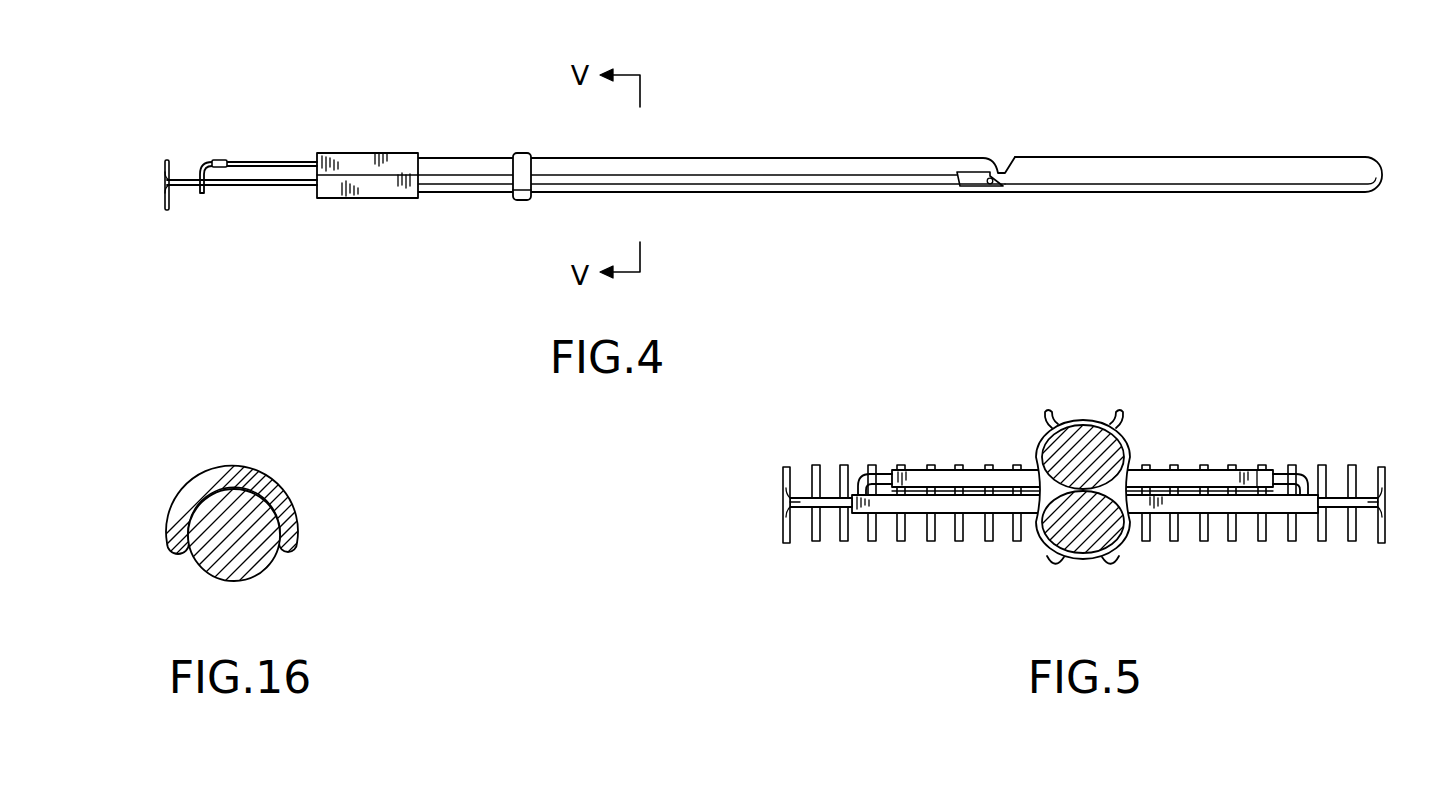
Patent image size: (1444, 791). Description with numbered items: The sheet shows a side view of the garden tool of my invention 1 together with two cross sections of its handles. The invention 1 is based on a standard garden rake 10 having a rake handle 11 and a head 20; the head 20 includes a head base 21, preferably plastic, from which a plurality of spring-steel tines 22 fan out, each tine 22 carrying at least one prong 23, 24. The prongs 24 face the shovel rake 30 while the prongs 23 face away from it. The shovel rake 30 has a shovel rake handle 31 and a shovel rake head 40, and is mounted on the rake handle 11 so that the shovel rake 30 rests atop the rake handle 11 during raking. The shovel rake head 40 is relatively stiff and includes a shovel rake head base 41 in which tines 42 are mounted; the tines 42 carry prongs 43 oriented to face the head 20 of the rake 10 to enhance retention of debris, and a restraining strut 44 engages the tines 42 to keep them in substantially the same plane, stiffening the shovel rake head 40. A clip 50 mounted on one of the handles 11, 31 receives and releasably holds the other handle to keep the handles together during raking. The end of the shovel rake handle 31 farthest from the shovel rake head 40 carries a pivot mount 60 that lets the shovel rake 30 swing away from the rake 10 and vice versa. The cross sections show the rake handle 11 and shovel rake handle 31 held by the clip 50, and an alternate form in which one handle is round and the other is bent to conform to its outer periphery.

In FIG. 4, the invention 1 is at (741, 186).
In FIG. 4, the garden rake 10 is at (900, 217).
In FIG. 4, the rake handle 11 is at (1130, 193).
In FIG. 16, the rake handle 11 is at (258, 572).
In FIG. 5, the rake handle 11 is at (1115, 535).
In FIG. 4, the rake head 20 is at (259, 232).
In FIG. 5, the rake head 20 is at (1084, 525).
In FIG. 4, the head base 21 is at (383, 199).
In FIG. 5, the head base 21 is at (1085, 504).
In FIG. 4, the tines 22 is at (275, 190).
In FIG. 5, the tines 22 is at (810, 507).
In FIG. 4, the prongs 23 is at (165, 212).
In FIG. 5, the prongs 23 is at (782, 520).
In FIG. 4, the prongs 24 is at (163, 175).
In FIG. 5, the prongs 24 is at (785, 498).
In FIG. 4, the shovel rake 30 is at (716, 104).
In FIG. 4, the shovel rake handle 31 is at (700, 157).
In FIG. 16, the shovel rake handle 31 is at (268, 485).
In FIG. 5, the shovel rake handle 31 is at (1088, 425).
In FIG. 4, the shovel rake head 40 is at (296, 117).
In FIG. 5, the shovel rake head 40 is at (1101, 433).
In FIG. 4, the shovel rake head base 41 is at (388, 152).
In FIG. 5, the shovel rake head base 41 is at (973, 469).
In FIG. 4, the tines 42 is at (262, 161).
In FIG. 5, the tines 42 is at (882, 470).
In FIG. 4, the prongs 43 is at (190, 158).
In FIG. 5, the prongs 43 is at (862, 475).
In FIG. 4, the restraining strut 44 is at (217, 158).
In FIG. 4, the clip 50 is at (520, 201).
In FIG. 5, the clip 50 is at (1133, 448).
In FIG. 4, the pivot mount 60 is at (968, 190).